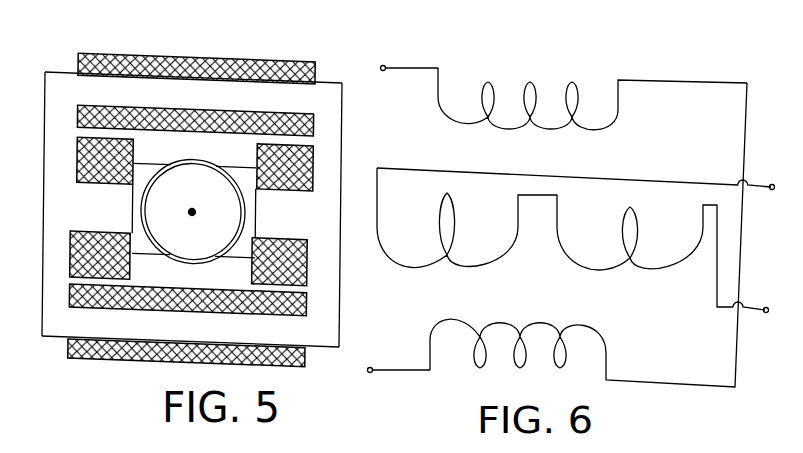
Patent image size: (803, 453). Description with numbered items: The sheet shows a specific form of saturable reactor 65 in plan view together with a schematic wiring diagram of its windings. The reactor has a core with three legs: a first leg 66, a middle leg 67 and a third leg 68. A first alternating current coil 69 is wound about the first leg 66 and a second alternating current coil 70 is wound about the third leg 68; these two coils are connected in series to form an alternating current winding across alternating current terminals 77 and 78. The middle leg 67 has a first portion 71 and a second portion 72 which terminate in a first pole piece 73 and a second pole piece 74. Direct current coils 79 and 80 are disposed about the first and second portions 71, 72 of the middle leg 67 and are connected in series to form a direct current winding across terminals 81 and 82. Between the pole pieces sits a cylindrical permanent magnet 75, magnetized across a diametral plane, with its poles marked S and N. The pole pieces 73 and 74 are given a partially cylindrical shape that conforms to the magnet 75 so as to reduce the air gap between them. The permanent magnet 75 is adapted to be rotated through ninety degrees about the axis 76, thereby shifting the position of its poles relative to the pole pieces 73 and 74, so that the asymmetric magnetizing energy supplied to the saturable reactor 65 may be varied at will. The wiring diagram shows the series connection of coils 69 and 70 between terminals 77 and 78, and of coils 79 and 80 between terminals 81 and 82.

In FIG. 5, the saturable reactor 65 is at (188, 212).
In FIG. 5, the first leg 66 is at (313, 74).
In FIG. 5, the middle leg 67 is at (302, 191).
In FIG. 5, the third leg 68 is at (69, 324).
In FIG. 5, the first alternating current coil 69 is at (228, 51).
In FIG. 6, the first alternating current coil 69 is at (537, 93).
In FIG. 5, the second alternating current coil 70 is at (153, 356).
In FIG. 6, the second alternating current coil 70 is at (483, 358).
In FIG. 5, the first portion 71 is at (104, 205).
In FIG. 5, the second portion 72 is at (302, 223).
In FIG. 5, the first pole piece 73 is at (149, 166).
In FIG. 5, the second pole piece 74 is at (247, 161).
In FIG. 5, the permanent magnet 75 is at (202, 185).
In FIG. 5, the axis 76 is at (192, 209).
In FIG. 6, the alternating current terminal 77 is at (384, 65).
In FIG. 6, the alternating current terminal 78 is at (375, 367).
In FIG. 5, the direct current coil 79 is at (78, 159).
In FIG. 6, the direct current coil 79 is at (458, 212).
In FIG. 5, the direct current coil 80 is at (313, 157).
In FIG. 6, the direct current coil 80 is at (638, 223).
In FIG. 6, the terminal 81 is at (768, 183).
In FIG. 6, the terminal 82 is at (763, 308).